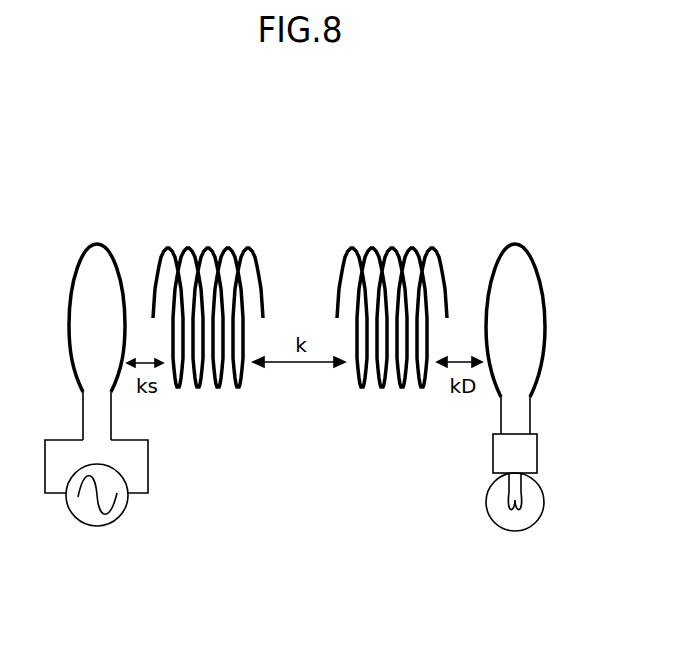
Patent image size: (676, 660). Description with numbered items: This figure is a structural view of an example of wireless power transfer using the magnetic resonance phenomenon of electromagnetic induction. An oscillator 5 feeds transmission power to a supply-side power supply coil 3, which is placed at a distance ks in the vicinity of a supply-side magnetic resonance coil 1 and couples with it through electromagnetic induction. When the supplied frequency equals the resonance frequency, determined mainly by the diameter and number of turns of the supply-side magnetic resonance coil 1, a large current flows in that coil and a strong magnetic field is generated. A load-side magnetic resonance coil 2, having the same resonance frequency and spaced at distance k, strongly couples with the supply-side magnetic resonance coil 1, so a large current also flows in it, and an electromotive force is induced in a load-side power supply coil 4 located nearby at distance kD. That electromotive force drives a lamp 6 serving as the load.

The supply-side magnetic resonance coil 1 is at (209, 248).
The load-side magnetic resonance coil 2 is at (390, 248).
The supply-side power supply coil 3 is at (95, 244).
The load-side power supply coil 4 is at (512, 244).
The oscillator 5 is at (88, 525).
The lamp 6 is at (508, 528).